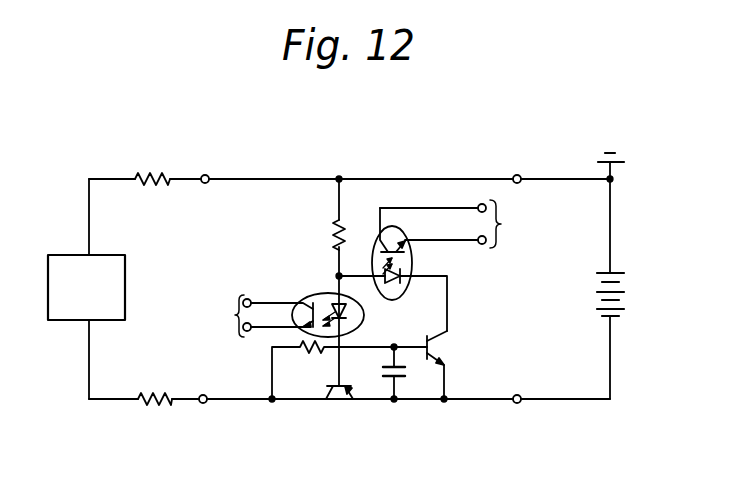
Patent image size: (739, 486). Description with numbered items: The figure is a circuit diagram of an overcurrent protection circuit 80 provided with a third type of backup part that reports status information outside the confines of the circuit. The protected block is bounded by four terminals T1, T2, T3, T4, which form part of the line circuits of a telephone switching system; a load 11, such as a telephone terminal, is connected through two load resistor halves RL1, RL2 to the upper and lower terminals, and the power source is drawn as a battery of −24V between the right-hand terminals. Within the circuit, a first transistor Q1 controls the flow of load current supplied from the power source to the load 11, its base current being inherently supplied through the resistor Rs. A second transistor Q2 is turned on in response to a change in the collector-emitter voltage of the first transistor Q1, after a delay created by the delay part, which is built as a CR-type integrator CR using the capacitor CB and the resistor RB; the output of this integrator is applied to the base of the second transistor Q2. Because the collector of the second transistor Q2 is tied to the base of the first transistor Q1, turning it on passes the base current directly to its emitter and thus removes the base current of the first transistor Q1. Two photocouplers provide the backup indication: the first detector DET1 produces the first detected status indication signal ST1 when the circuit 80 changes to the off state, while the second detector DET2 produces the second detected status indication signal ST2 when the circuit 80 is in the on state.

The load 11 is at (60, 322).
The overcurrent protection circuit 80 is at (358, 208).
The load resistor half RL/2 (upper) RL1 is at (148, 185).
The load resistor half RL/2 (lower) RL2 is at (150, 405).
The terminal T1 is at (207, 174).
The terminal T2 is at (205, 394).
The terminal T3 is at (519, 174).
The terminal T4 is at (519, 394).
The resistor Rs is at (330, 236).
The first detector DET1 is at (413, 264).
The second detector DET2 is at (320, 294).
The first detected status indication signal ST1 is at (507, 224).
The second detected status indication signal ST2 is at (231, 315).
The battery of −24 V 24V is at (640, 234).
The resistor RB is at (318, 352).
The integrator CR is at (395, 338).
The capacitor CB is at (404, 381).
The first transistor Q1 is at (342, 400).
The second transistor Q2 is at (440, 350).